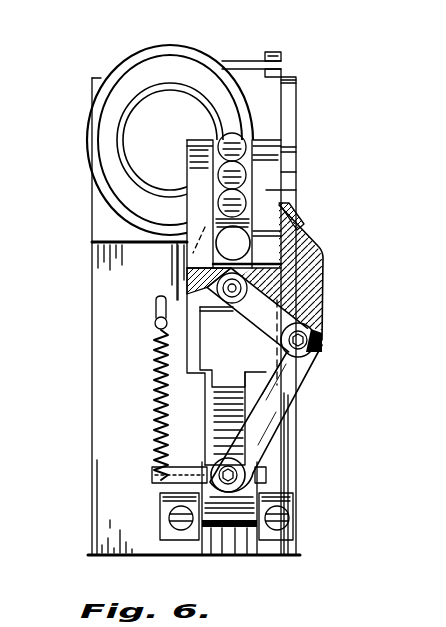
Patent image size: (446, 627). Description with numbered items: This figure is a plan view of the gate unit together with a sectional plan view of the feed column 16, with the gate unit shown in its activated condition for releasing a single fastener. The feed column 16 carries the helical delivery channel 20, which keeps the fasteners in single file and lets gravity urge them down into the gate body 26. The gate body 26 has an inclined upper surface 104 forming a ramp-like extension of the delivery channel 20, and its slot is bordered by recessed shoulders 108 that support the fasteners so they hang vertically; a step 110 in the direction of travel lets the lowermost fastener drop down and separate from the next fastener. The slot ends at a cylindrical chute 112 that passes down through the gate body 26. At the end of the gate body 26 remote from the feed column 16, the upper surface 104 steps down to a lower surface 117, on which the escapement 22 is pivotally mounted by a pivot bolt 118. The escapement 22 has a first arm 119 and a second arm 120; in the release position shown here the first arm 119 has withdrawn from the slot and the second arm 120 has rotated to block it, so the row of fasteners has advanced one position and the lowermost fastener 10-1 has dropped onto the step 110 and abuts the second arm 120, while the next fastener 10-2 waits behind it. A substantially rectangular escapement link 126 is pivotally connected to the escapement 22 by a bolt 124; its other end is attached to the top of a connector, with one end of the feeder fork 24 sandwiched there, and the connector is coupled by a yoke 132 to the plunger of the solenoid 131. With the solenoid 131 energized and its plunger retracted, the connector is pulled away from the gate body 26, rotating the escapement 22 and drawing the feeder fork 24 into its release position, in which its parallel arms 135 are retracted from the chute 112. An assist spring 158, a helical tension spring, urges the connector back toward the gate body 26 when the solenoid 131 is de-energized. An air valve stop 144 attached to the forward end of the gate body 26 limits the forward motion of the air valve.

The feed column 16 is at (125, 56).
The delivery channel 20 is at (177, 66).
The air valve stop 144 is at (244, 61).
The gate body 26 is at (290, 149).
The next fastener 10-2 is at (213, 170).
The lowermost fastener 10-1 is at (213, 190).
The step 110 is at (213, 208).
The upper surface 104 is at (267, 180).
The recessed shoulders 108 is at (266, 191).
The second arm 120 is at (288, 206).
The first arm 119 is at (303, 231).
The chute 112 is at (262, 258).
The pivot bolt 118 is at (187, 270).
The surface 117 is at (187, 290).
The escapement 22 is at (314, 299).
The bolt 124 is at (318, 344).
The escapement link 126 is at (296, 393).
The parallel arms 135 is at (185, 352).
The feeder fork 24 is at (199, 403).
The assist spring 158 is at (172, 437).
The yoke 132 is at (205, 487).
The solenoid 131 is at (234, 543).